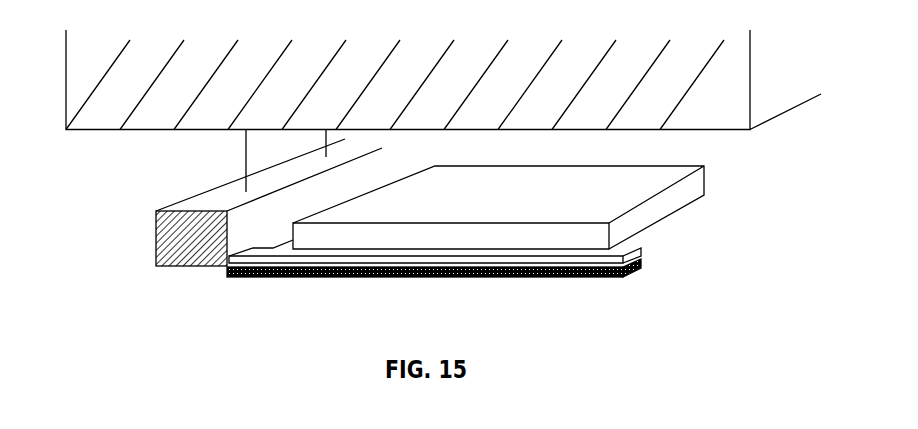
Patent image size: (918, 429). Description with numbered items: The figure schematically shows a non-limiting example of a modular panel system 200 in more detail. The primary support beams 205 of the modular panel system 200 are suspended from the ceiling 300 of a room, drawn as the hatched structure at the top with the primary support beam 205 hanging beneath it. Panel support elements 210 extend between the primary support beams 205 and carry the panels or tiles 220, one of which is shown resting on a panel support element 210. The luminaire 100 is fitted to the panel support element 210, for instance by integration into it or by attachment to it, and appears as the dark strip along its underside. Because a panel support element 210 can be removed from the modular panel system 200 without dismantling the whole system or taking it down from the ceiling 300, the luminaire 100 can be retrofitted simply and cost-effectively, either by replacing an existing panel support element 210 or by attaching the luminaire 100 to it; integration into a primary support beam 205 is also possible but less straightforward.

The ceiling 300 is at (83, 124).
The modular panel system 200 is at (131, 241).
The primary support beam 205 is at (183, 253).
The panel support element 210 is at (509, 259).
The panel or tile 220 is at (688, 195).
The luminaire 100 is at (628, 280).